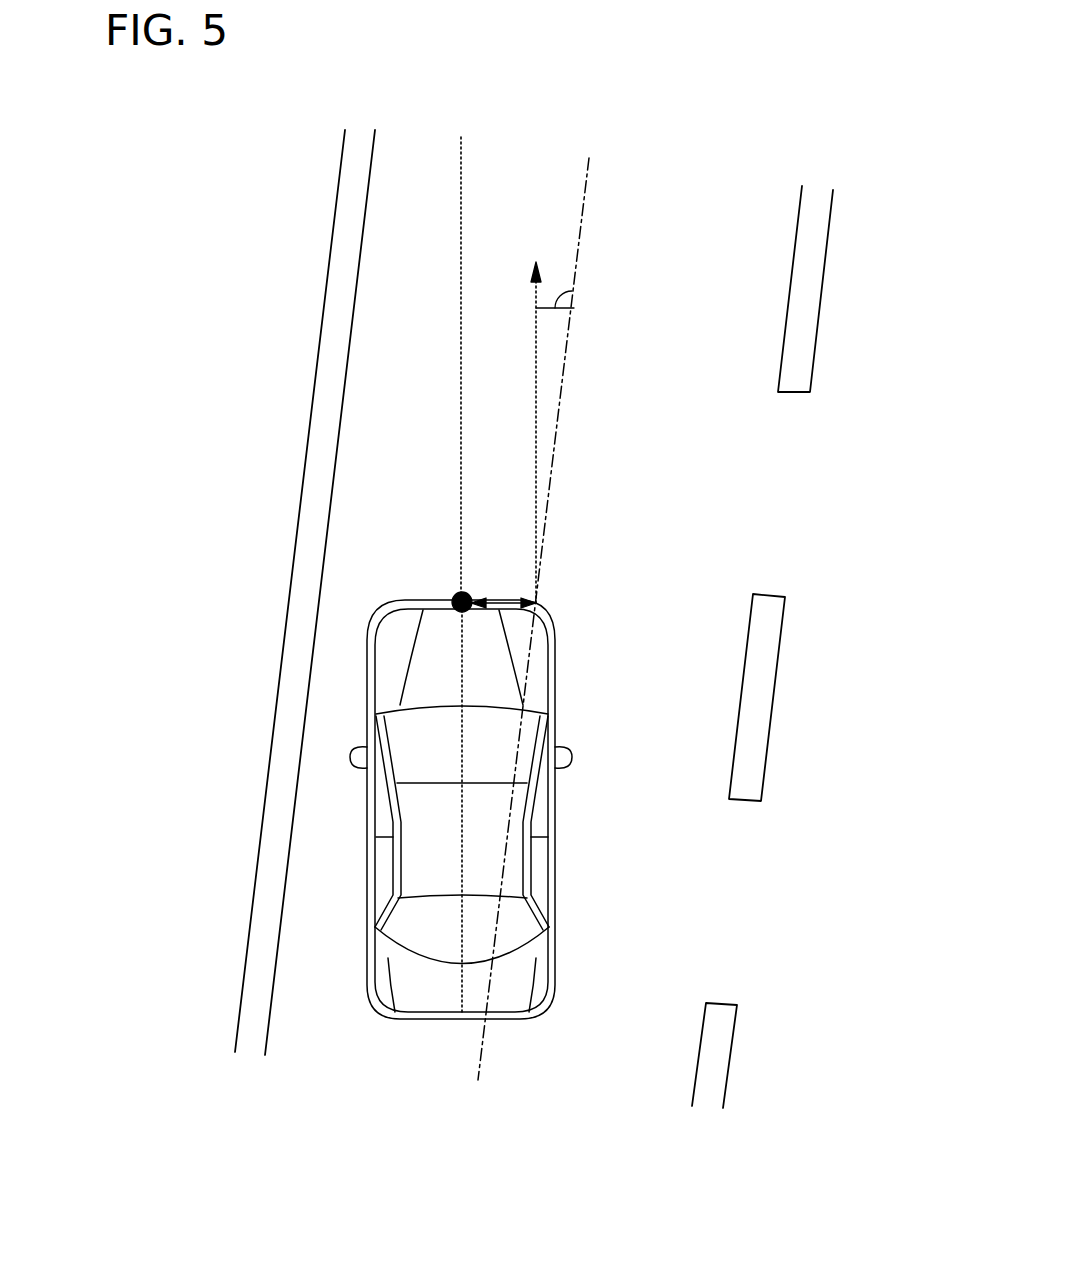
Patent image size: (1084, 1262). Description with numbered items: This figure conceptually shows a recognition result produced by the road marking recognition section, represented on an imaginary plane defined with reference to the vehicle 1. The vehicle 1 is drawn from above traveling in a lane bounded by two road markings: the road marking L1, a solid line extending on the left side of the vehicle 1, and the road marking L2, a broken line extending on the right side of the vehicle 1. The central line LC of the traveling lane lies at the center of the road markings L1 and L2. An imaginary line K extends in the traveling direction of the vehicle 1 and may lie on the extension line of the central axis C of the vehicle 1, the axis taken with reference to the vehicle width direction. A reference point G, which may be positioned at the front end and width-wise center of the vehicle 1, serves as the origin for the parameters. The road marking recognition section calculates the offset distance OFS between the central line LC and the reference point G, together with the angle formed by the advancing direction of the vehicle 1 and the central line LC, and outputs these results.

The vehicle 1 is at (556, 962).
The central axis C is at (462, 808).
The reference point G is at (455, 592).
The offset distance OFS is at (506, 601).
The imaginary line K is at (461, 412).
The central line of traveling lane LC is at (557, 428).
The road marking L1 is at (302, 486).
The road marking L2 is at (822, 288).